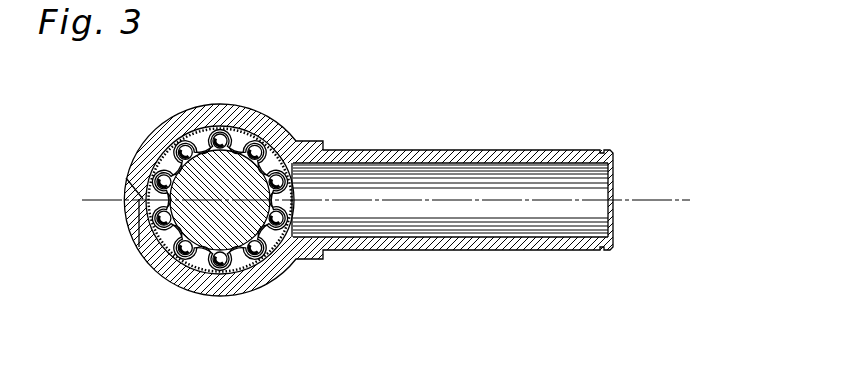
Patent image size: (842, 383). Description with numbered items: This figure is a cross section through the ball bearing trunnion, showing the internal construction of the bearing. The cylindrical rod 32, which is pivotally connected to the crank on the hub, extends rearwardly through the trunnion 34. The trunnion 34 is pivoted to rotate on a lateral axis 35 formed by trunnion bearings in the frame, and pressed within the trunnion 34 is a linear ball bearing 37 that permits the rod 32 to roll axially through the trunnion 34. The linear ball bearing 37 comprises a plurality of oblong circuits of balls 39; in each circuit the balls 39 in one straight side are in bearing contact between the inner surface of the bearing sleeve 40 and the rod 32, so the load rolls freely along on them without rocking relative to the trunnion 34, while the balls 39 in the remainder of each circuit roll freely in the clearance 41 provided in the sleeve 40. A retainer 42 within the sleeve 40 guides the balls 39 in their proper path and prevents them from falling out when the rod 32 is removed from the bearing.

The cylindrical rod 32 is at (240, 137).
The trunnion 34 is at (148, 141).
The lateral axis 35 is at (650, 203).
The linear ball bearing 37 is at (184, 136).
The balls 39 is at (165, 253).
The bearing sleeve 40 is at (226, 178).
The clearance 41 is at (272, 135).
The retainer 42 is at (199, 276).